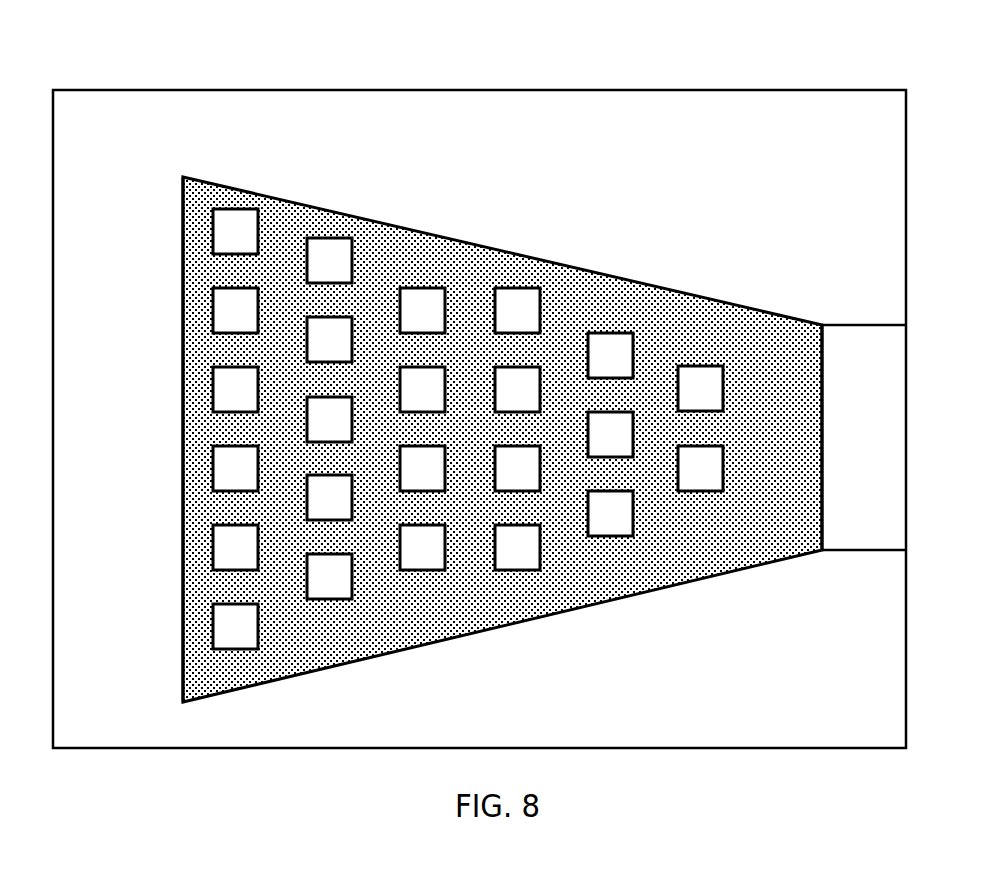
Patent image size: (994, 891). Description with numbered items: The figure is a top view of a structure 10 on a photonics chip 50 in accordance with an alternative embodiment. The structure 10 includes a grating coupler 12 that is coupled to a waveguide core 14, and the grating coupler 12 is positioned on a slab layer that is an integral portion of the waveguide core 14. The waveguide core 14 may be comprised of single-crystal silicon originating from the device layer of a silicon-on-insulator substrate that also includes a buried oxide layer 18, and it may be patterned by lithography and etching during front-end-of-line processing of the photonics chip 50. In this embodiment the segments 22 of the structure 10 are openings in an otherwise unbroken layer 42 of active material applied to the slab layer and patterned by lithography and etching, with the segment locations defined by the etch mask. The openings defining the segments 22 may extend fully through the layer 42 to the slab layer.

The photonics chip 50 is at (123, 69).
The structure 10 is at (475, 405).
The grating coupler 12 is at (581, 303).
The waveguide core 14 is at (854, 520).
The buried oxide layer 18 is at (821, 227).
The segments 22 is at (238, 309).
The layer 42 is at (222, 672).